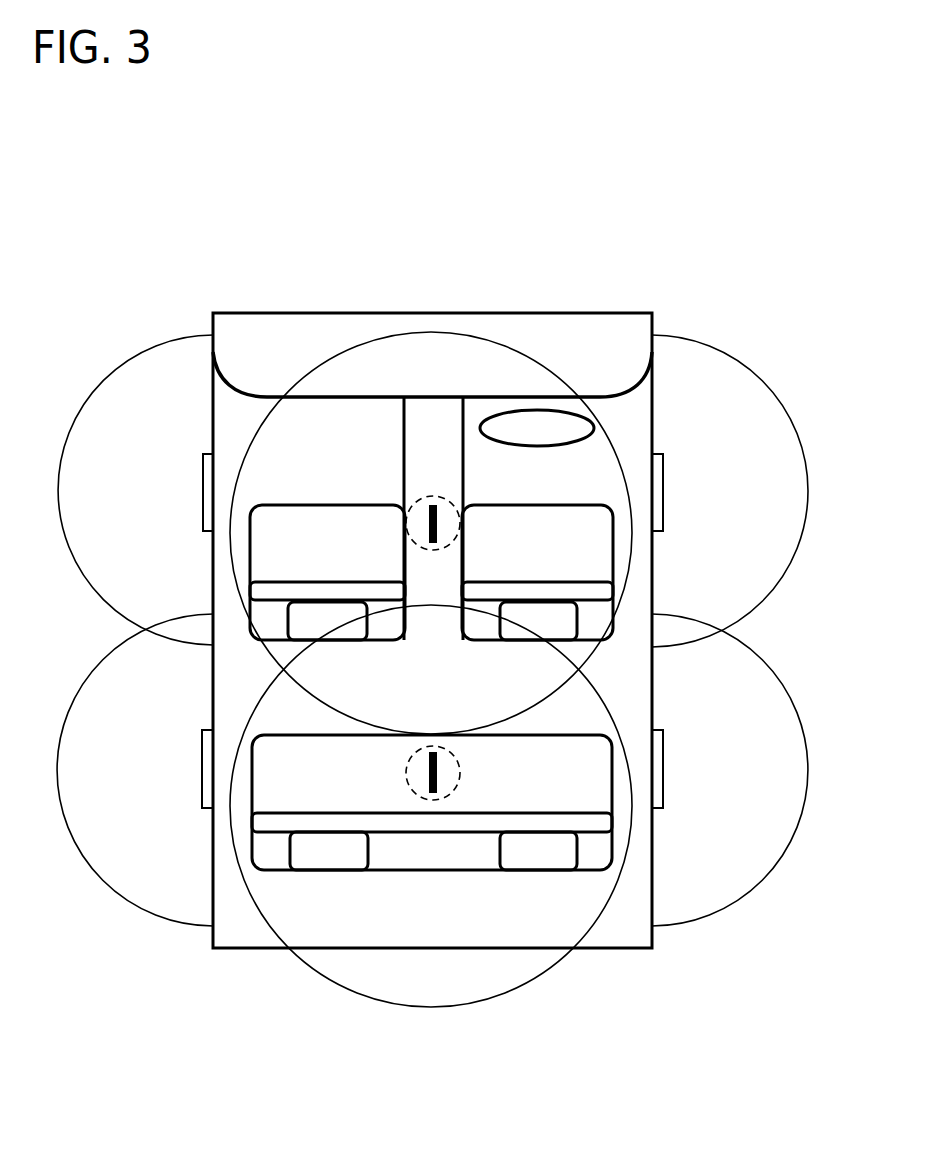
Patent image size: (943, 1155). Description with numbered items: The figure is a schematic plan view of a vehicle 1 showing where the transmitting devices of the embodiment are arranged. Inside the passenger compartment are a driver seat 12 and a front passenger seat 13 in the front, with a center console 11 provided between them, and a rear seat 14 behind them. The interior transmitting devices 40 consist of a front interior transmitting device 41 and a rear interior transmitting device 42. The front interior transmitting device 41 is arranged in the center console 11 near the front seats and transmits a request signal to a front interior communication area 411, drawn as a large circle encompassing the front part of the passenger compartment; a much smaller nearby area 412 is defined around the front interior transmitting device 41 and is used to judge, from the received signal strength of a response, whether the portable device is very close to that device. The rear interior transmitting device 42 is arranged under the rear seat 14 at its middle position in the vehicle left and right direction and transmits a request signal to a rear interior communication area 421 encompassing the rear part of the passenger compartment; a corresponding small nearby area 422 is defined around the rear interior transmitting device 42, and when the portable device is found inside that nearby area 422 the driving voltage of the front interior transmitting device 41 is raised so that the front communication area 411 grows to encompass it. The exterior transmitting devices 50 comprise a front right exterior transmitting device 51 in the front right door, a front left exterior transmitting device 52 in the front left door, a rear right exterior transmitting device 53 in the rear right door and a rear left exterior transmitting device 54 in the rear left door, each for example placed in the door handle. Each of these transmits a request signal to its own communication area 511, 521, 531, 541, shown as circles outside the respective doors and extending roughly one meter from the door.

The vehicle 1 is at (249, 226).
The center console 11 is at (443, 427).
The driver seat 12 is at (595, 553).
The front passenger seat 13 is at (270, 555).
The rear seat 14 is at (590, 787).
The interior transmitting devices 40 is at (495, 629).
The front interior transmitting device 41 is at (438, 522).
The rear interior transmitting device 42 is at (438, 773).
The front interior communication area 411 is at (362, 345).
The nearby area 412 is at (413, 498).
The rear interior communication area 421 is at (538, 975).
The nearby area 422 is at (403, 770).
The exterior transmitting devices 50 is at (434, 631).
The front right exterior transmitting device 51 is at (663, 476).
The front left exterior transmitting device 52 is at (203, 478).
The rear right exterior transmitting device 53 is at (663, 750).
The rear left exterior transmitting device 54 is at (202, 749).
The communication area 511 is at (759, 378).
The communication area 521 is at (107, 378).
The communication area 531 is at (812, 722).
The communication area 541 is at (65, 718).